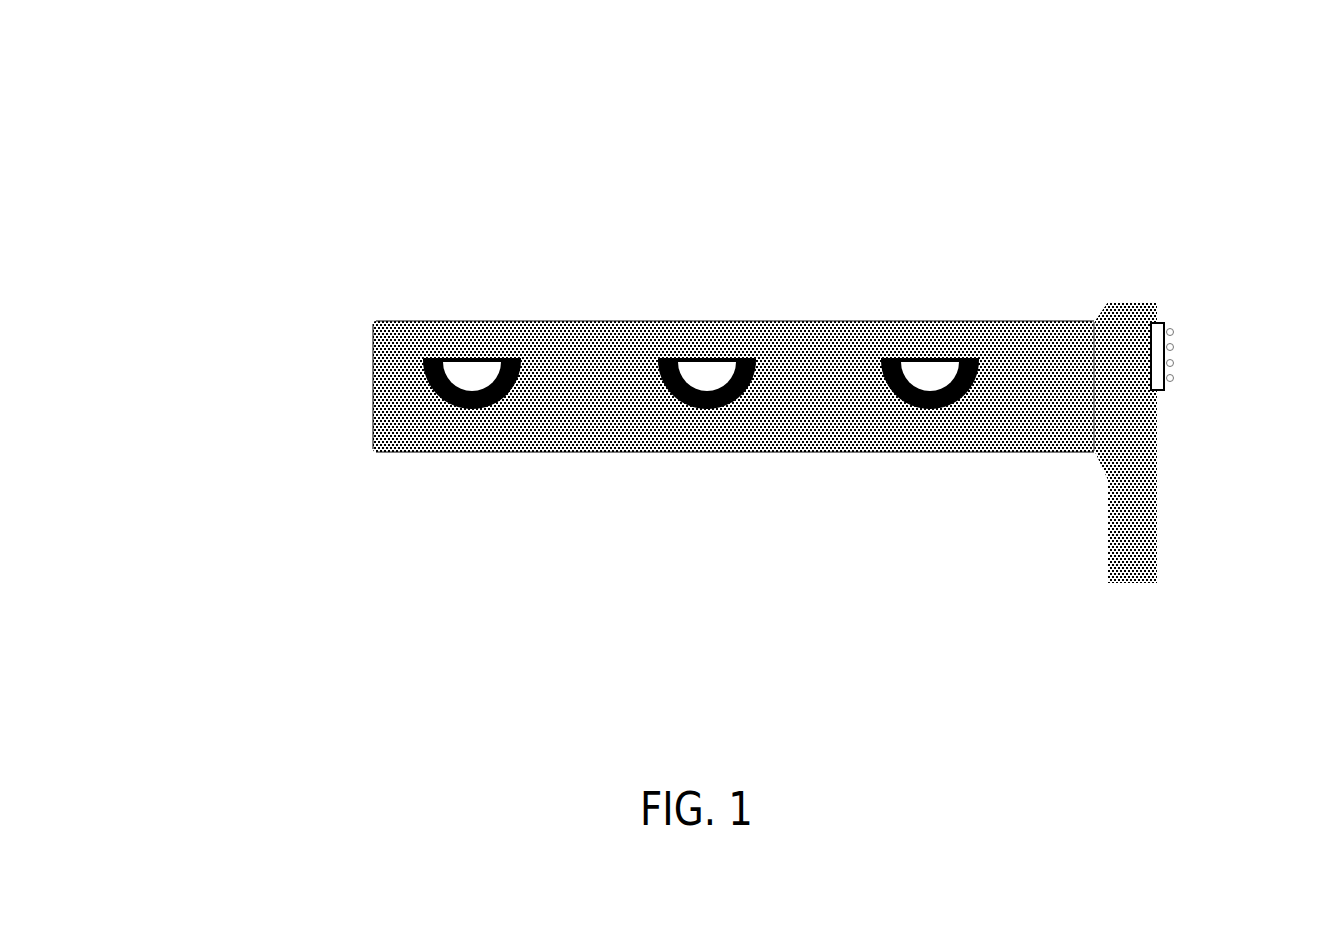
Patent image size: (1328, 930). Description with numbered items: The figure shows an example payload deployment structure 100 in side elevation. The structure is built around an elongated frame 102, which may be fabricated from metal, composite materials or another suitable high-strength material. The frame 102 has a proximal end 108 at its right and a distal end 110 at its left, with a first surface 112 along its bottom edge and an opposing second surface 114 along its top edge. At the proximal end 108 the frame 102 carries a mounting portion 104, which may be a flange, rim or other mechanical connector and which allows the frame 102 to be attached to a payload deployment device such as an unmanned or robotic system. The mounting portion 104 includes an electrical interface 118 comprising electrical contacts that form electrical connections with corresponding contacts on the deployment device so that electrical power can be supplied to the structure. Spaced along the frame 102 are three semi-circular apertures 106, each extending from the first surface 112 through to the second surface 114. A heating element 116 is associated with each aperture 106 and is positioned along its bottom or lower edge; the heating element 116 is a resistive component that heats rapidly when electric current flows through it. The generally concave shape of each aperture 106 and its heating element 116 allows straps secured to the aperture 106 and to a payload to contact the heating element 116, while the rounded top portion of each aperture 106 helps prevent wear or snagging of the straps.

The payload deployment structure 100 is at (743, 372).
The frame 102 is at (448, 318).
The mounting portion 104 is at (1143, 302).
The aperture 106 is at (462, 411).
The proximal end 108 is at (1092, 450).
The distal end 110 is at (370, 415).
The first surface 112 is at (788, 453).
The second surface 114 is at (628, 315).
The heating element 116 is at (962, 357).
The electrical interface 118 is at (1206, 327).